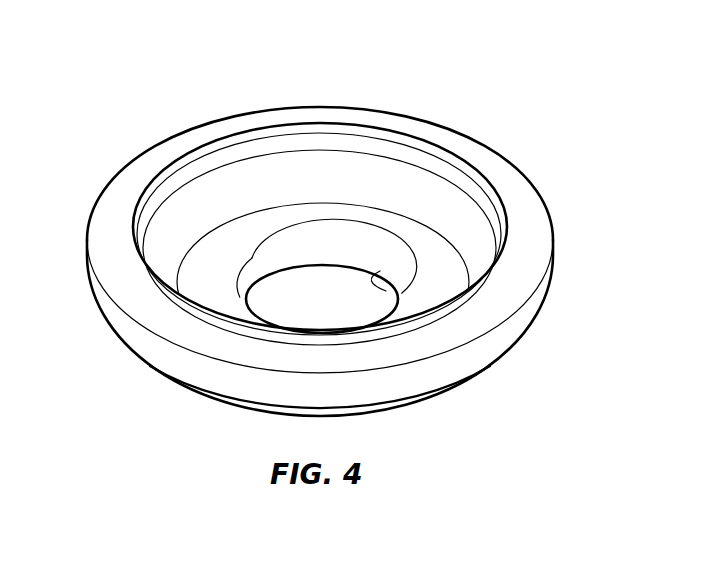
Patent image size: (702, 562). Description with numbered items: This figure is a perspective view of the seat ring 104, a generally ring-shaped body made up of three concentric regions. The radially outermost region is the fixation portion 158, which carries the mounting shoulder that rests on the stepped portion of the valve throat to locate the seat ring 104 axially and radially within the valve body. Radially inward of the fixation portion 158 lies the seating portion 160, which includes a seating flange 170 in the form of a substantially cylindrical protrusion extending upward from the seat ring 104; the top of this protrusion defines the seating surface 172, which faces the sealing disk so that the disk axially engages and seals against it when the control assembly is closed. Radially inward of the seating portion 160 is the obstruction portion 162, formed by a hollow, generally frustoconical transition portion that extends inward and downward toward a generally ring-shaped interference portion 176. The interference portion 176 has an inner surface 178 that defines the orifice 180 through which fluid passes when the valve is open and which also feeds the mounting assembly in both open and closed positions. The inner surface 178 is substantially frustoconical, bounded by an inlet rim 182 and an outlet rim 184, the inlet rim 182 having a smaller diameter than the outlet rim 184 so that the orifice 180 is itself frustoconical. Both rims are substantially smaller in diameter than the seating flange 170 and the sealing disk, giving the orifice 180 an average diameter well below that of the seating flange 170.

The seat ring 104 is at (545, 193).
The fixation portion 158 is at (129, 185).
The seating portion 160 is at (445, 146).
The obstruction portion 162 is at (357, 220).
The seating flange 170 is at (490, 180).
The seating surface 172 is at (473, 178).
The interference portion 176 is at (221, 190).
The inner surface 178 is at (255, 277).
The orifice 180 is at (331, 307).
The inlet rim 182 is at (375, 272).
The outlet rim 184 is at (288, 245).